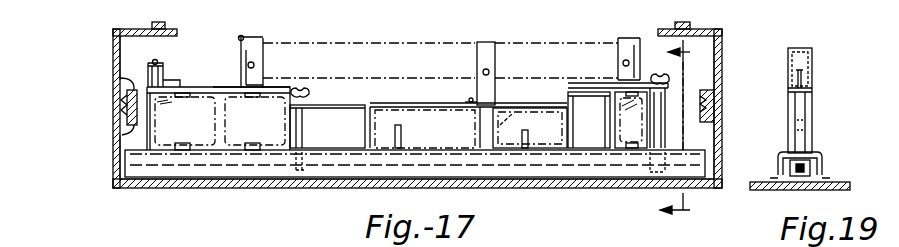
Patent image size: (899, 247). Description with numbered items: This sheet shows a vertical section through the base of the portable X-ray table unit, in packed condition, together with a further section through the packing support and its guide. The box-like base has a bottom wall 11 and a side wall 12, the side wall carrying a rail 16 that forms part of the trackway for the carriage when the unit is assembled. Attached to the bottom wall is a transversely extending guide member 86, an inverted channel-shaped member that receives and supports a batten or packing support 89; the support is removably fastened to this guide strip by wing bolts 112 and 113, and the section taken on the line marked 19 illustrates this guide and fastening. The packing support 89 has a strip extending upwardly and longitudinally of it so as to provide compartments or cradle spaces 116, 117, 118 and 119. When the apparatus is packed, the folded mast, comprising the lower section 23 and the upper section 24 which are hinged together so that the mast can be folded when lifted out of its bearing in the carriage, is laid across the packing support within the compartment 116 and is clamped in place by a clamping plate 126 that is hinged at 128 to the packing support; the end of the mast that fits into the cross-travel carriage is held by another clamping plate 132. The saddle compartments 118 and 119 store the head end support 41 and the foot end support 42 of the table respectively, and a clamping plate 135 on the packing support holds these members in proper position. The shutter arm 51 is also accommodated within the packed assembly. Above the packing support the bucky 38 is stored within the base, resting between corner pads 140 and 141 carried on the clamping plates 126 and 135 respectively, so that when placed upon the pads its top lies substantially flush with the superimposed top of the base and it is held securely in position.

In FIG. 17, the bottom wall 11 is at (266, 187).
In FIG. 17, the side wall 12 is at (723, 50).
In FIG. 17, the rail 16 is at (122, 84).
In FIG. 17, the bearing 19 is at (659, 131).
In FIG. 17, the lower section 23 is at (185, 121).
In FIG. 17, the upper section 24 is at (255, 121).
In FIG. 17, the bucky 38 is at (372, 40).
In FIG. 17, the head end support 41 is at (530, 128).
In FIG. 17, the foot end support 42 is at (598, 107).
In FIG. 17, the shutter arm 51 is at (358, 69).
In FIG. 19, the guide member 86 is at (812, 165).
In FIG. 17, the packing support 89 is at (146, 131).
In FIG. 19, the packing support 89 is at (815, 152).
In FIG. 17, the wing bolt 112 is at (304, 127).
In FIG. 17, the wing bolt 113 is at (666, 104).
In FIG. 19, the wing bolt 113 is at (803, 104).
In FIG. 17, the compartment 116 is at (165, 90).
In FIG. 17, the compartment 117 is at (408, 124).
In FIG. 17, the saddle compartment 118 is at (562, 112).
In FIG. 17, the saddle compartment 119 is at (590, 120).
In FIG. 17, the clamping plate 126 is at (213, 87).
In FIG. 17, the hinge 128 is at (168, 50).
In FIG. 17, the clamping plate 132 is at (113, 44).
In FIG. 17, the clamping plate 135 is at (557, 97).
In FIG. 17, the corner pad 140 is at (243, 37).
In FIG. 17, the corner pad 141 is at (632, 30).